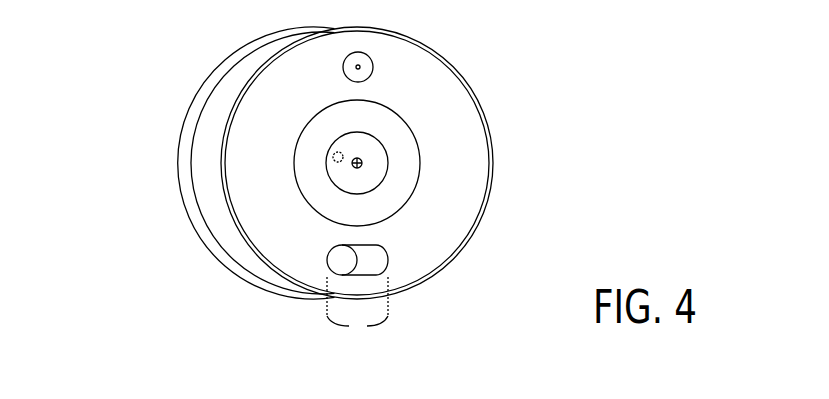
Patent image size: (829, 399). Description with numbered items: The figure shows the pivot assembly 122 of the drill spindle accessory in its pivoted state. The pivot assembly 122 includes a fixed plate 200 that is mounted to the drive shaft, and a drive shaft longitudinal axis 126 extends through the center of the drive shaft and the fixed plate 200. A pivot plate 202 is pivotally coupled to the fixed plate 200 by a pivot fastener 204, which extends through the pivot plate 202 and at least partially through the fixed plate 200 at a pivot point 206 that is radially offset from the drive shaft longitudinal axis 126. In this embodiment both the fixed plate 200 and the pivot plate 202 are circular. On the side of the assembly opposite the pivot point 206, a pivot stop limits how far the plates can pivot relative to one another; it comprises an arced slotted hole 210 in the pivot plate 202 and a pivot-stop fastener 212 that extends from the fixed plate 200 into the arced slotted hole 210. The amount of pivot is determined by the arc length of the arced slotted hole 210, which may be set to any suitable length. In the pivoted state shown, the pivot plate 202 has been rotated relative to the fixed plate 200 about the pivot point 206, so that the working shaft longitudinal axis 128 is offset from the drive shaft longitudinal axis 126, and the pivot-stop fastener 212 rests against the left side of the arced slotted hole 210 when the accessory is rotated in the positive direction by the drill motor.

The pivot assembly 122 is at (196, 47).
The drive shaft longitudinal axis 126 is at (334, 156).
The working shaft longitudinal axis 128 is at (362, 163).
The fixed plate 200 is at (205, 243).
The pivot plate 202 is at (487, 104).
The pivot fastener 204 is at (355, 53).
The pivot point 206 is at (372, 55).
The arced slotted hole 210 is at (378, 257).
The pivot-stop fastener 212 is at (343, 263).